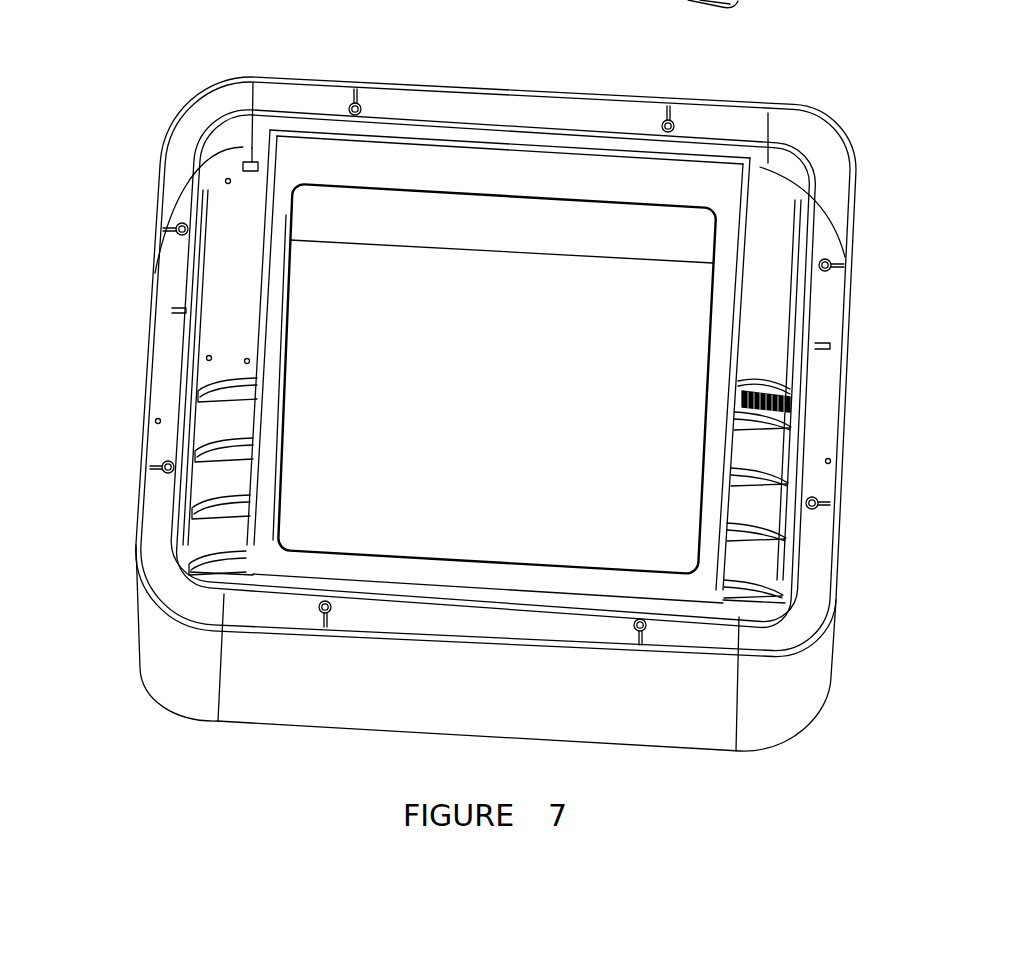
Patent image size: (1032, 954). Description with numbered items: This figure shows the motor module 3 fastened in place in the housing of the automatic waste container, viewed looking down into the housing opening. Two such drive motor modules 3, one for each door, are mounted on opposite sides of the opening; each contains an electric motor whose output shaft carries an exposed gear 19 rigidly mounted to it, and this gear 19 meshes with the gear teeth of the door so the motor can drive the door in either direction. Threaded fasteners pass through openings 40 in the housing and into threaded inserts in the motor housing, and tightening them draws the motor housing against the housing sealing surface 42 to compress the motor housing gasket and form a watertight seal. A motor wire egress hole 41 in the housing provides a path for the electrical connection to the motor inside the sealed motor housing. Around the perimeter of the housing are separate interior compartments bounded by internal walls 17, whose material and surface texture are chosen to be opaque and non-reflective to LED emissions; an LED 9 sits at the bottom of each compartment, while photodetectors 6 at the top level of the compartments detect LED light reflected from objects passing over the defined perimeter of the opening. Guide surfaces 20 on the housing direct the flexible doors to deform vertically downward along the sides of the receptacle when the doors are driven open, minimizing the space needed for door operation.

The motor module 3 is at (788, 242).
The photodetector 6 is at (162, 466).
The LED 9 is at (156, 421).
The internal wall 17 is at (167, 278).
The gear 19 is at (792, 400).
The guide surface 20 is at (203, 380).
The opening 40 is at (246, 359).
The motor wire egress hole 41 is at (245, 160).
The housing sealing surface 42 is at (243, 230).